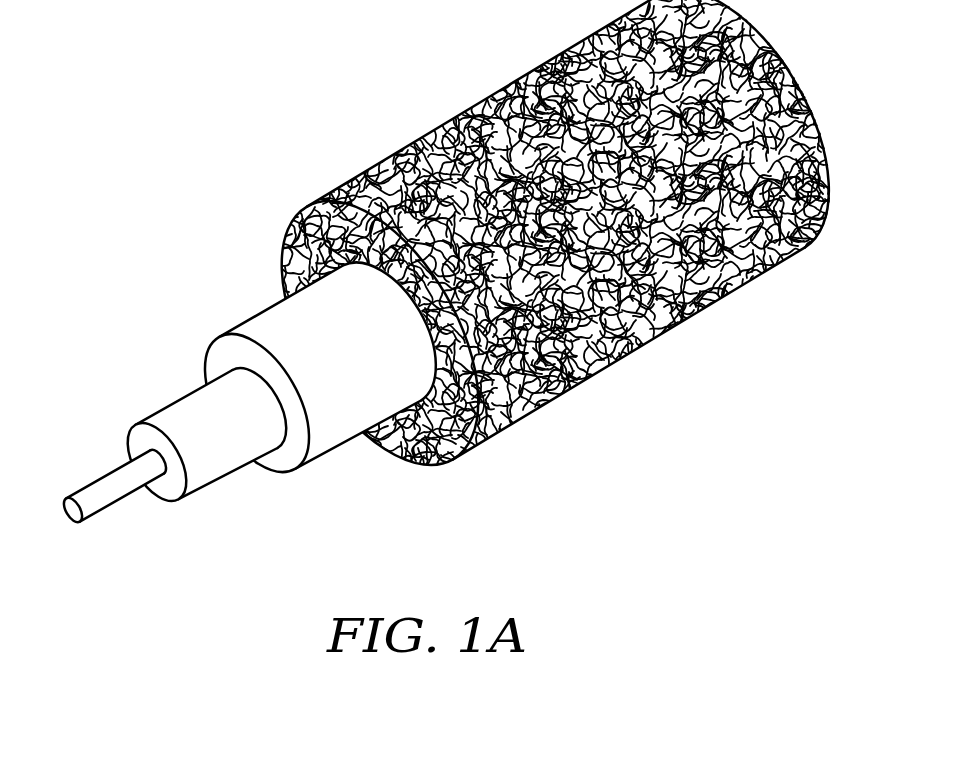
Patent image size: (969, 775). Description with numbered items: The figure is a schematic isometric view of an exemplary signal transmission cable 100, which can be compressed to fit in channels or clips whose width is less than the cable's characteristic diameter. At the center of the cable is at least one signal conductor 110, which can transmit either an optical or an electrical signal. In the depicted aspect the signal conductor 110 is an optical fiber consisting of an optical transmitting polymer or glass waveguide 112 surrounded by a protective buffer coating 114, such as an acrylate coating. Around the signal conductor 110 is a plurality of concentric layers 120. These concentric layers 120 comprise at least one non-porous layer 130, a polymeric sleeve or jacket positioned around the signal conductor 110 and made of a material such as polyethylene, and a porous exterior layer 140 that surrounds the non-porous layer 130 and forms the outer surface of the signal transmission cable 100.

The signal transmission cable 100 is at (197, 135).
The signal conductor 110 is at (312, 477).
The waveguide 112 is at (98, 498).
The protective buffer coating 114 is at (175, 420).
The concentric layers 120 is at (390, 567).
The non-porous layer 130 is at (265, 332).
The porous exterior layer 140 is at (518, 383).